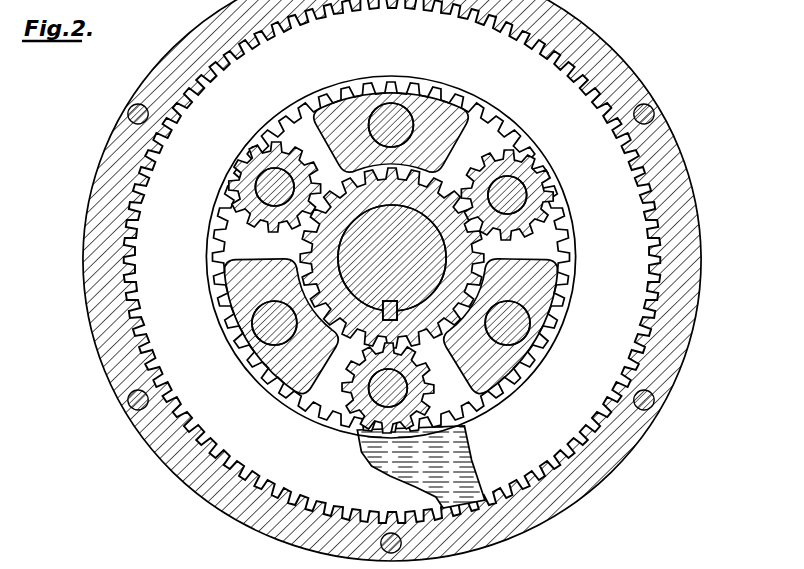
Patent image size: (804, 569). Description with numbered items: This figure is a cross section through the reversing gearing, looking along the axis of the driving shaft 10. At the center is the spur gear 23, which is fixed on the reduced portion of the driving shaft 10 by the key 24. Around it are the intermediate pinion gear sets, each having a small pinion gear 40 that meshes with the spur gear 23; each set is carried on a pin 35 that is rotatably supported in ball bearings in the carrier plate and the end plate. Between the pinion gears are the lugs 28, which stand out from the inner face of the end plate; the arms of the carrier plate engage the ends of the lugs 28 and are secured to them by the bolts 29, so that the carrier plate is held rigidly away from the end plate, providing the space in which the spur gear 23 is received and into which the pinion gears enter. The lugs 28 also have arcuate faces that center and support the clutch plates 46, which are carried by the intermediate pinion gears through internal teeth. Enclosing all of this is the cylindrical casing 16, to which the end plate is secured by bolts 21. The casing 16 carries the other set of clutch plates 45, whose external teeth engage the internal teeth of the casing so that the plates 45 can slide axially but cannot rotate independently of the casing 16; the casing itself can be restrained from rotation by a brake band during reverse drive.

The driving shaft 10 is at (430, 258).
The cylindrical casing 16 is at (593, 474).
The bolts 21 is at (649, 407).
The spur gear 23 is at (323, 243).
The key 24 is at (398, 313).
The lugs 28 is at (447, 108).
The bolts 29 is at (395, 118).
The pins 35 is at (533, 184).
The small pinion gear 40 is at (522, 178).
The clutch plates 45 is at (250, 458).
The clutch plates 46 is at (470, 457).